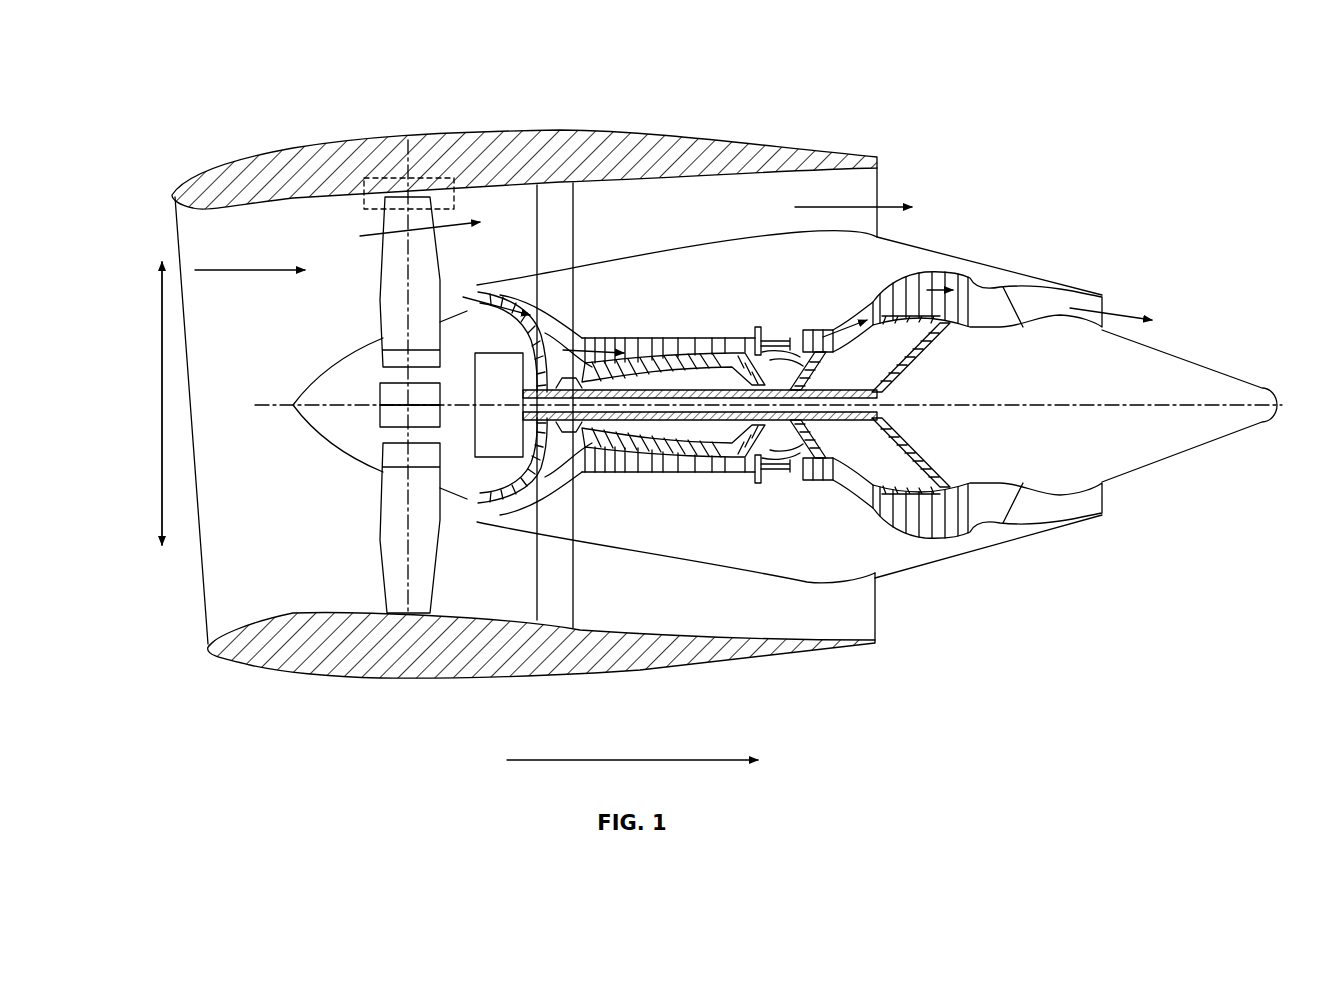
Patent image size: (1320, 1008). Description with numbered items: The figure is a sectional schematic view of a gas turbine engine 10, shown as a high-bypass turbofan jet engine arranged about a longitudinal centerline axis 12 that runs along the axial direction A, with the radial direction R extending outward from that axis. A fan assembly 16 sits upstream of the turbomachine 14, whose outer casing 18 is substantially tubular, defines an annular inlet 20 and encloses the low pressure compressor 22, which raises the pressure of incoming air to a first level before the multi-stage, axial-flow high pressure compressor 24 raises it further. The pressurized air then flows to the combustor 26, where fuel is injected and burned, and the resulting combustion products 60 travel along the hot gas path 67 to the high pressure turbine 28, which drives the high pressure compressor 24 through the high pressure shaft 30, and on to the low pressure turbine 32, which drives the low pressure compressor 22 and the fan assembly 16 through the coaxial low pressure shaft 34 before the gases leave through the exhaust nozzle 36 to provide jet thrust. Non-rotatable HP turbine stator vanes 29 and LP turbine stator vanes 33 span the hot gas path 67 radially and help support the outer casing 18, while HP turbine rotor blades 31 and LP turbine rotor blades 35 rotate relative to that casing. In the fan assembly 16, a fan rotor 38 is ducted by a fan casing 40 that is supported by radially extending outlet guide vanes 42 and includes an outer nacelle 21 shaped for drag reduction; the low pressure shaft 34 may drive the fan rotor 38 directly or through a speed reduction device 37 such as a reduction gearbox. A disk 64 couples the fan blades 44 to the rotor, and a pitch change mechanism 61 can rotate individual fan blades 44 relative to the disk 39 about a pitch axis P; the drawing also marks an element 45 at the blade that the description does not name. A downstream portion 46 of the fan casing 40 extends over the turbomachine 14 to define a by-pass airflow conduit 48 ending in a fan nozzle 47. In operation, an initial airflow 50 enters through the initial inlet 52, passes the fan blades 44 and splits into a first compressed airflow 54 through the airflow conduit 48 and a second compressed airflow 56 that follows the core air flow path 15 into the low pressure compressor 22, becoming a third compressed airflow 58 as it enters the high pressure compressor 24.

The gas turbine engine 10 is at (1020, 145).
The longitudinal centerline axis 12 is at (1040, 403).
The turbomachine 14 is at (672, 293).
The core air flow path 15 is at (577, 478).
The fan assembly 16 is at (292, 210).
The outer casing 18 is at (725, 565).
The annular inlet 20 is at (473, 510).
The outer nacelle 21 is at (432, 680).
The low pressure compressor 22 is at (514, 527).
The high pressure compressor 24 is at (605, 474).
The combustor 26 is at (760, 480).
The high pressure turbine 28 is at (840, 477).
The HP turbine stator vanes 29 is at (797, 485).
The high pressure shaft 30 is at (808, 363).
The HP turbine rotor blades 31 is at (789, 482).
The low pressure turbine 32 is at (960, 540).
The LP turbine stator vanes 33 is at (883, 522).
The low pressure shaft 34 is at (893, 368).
The LP turbine rotor blades 35 is at (890, 530).
The exhaust nozzle 36 is at (1015, 513).
The speed reduction device 37 is at (537, 328).
The fan rotor 38 is at (347, 458).
The disk 39 is at (380, 387).
The fan casing 40 is at (409, 178).
The outlet guide vanes 42 is at (583, 222).
The fan blades 44 is at (380, 556).
The fan blade tip 45 is at (370, 612).
The downstream portion of the fan casing 46 is at (820, 162).
The fan nozzle 47 is at (863, 192).
The airflow conduit 48 is at (803, 205).
The initial airflow 50 is at (258, 268).
The initial inlet 52 is at (205, 620).
The first compressed airflow 54 is at (385, 222).
The second compressed airflow 56 is at (463, 297).
The third compressed airflow 58 is at (590, 343).
The combustion products 60 is at (822, 333).
The pitch change mechanism 61 is at (397, 377).
The disk 64 is at (308, 422).
The hot gas path 67 is at (857, 305).
The axial direction A is at (612, 760).
The pitch axis P is at (410, 252).
The radial direction R is at (163, 407).